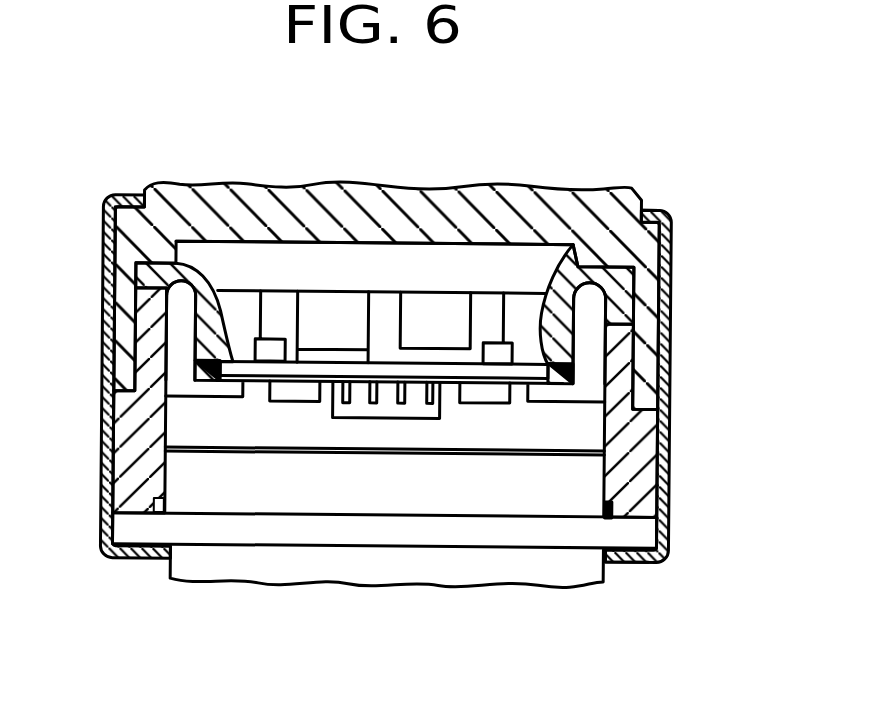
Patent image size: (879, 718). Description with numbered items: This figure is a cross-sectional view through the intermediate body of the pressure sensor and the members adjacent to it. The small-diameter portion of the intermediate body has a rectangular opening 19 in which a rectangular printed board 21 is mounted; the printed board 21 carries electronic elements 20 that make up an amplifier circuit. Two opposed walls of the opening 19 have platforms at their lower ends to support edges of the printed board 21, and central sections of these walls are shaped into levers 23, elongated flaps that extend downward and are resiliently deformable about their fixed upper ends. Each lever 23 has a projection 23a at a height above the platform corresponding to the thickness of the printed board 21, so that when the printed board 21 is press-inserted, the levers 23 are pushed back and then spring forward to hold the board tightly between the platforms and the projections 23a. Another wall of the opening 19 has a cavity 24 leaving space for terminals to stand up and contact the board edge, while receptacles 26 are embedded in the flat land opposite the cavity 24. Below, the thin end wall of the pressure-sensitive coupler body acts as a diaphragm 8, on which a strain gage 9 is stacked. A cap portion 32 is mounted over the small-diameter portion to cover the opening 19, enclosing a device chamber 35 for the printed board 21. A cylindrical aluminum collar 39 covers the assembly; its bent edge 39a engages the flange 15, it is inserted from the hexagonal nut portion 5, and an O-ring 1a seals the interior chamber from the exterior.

The O-ring 1a is at (640, 402).
The hexagonal nut portion 5 is at (584, 588).
The diaphragm 8 is at (285, 444).
The strain gage 9 is at (384, 453).
The flange 15 is at (647, 533).
The rectangular opening 19 is at (340, 267).
The electronic elements 20 is at (393, 425).
The printed board 21 is at (484, 380).
The lever 23 is at (216, 250).
The projection 23a is at (222, 357).
The cavity 24 is at (200, 388).
The receptacle 26 is at (278, 305).
The cap portion 32 is at (658, 284).
The device chamber 35 is at (455, 257).
The collar 39 is at (673, 448).
The bent edge 39a is at (660, 207).